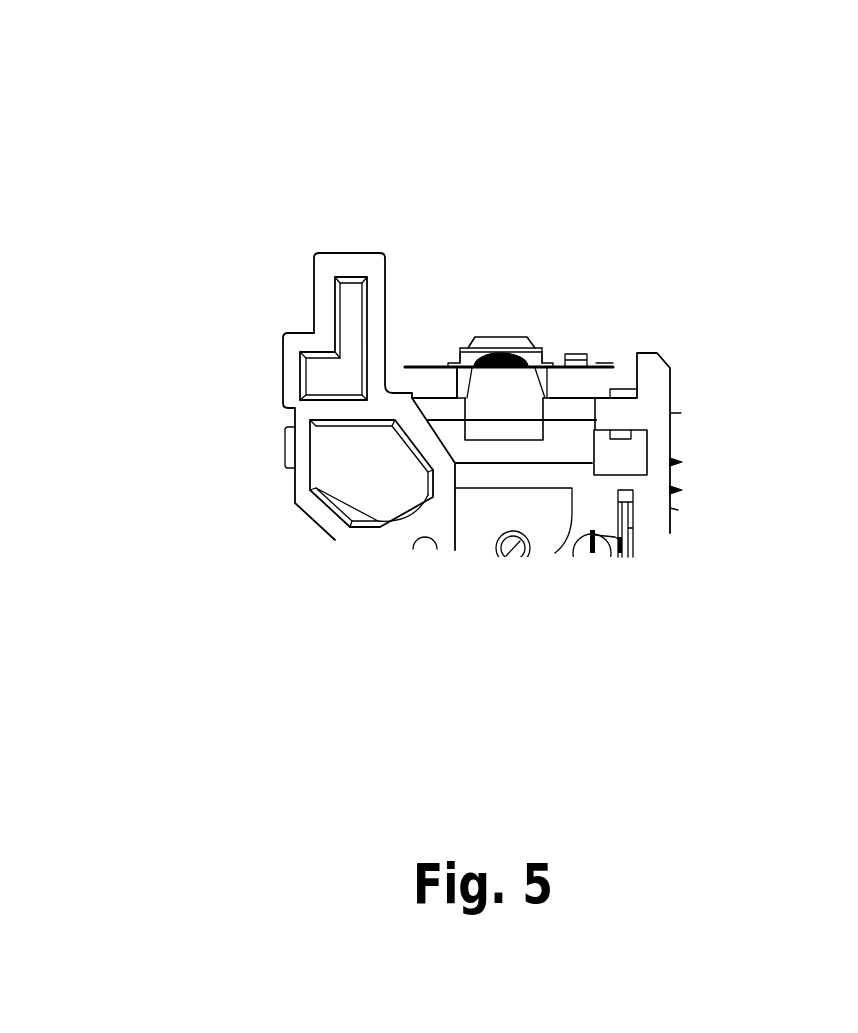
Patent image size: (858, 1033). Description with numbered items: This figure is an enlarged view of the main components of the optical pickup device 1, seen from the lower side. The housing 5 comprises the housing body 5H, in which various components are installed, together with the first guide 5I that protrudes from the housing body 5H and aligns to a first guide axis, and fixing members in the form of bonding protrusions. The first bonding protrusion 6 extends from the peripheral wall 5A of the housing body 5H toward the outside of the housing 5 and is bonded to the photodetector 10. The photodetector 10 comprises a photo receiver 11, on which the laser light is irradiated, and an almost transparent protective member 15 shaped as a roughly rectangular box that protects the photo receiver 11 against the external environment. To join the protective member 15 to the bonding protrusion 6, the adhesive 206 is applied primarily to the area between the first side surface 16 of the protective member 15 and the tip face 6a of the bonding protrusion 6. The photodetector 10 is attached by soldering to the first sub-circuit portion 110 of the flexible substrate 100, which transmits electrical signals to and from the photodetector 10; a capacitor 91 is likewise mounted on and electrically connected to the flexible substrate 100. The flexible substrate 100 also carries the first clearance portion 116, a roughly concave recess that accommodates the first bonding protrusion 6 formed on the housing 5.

The disc drive apparatus 1 is at (752, 128).
The housing 5 is at (672, 387).
The peripheral wall 5A is at (489, 325).
The housing body 5H is at (295, 488).
The first guide 5I is at (314, 273).
The bonding protrusion 6 is at (523, 400).
The tip face 6a is at (492, 452).
The photodetector 10 is at (527, 352).
The photo receiver 11 is at (508, 342).
The protective member 15 is at (482, 342).
The first side surface 16 is at (449, 362).
The capacitor 91 is at (603, 364).
The flexible substrate 100 is at (598, 396).
The first sub-circuit portion 110 is at (415, 366).
The first clearance portion 116 is at (577, 357).
The adhesive 206 is at (544, 362).